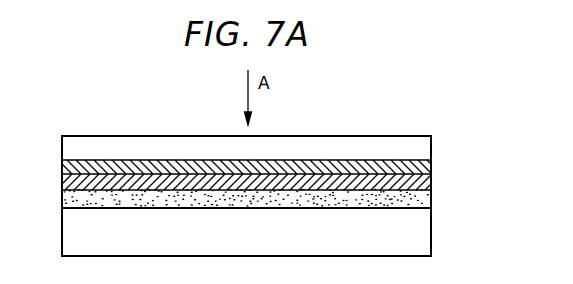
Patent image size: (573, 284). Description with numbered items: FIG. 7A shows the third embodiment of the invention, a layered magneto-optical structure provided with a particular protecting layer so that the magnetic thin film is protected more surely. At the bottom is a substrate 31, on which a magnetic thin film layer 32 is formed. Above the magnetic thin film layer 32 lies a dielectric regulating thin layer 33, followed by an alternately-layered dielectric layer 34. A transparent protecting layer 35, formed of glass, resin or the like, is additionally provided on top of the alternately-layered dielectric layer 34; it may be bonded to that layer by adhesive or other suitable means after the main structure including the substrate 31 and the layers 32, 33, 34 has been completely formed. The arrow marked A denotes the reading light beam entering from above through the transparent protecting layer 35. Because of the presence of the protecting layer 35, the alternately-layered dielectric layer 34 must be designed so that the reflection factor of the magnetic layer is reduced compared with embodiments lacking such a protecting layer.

The substrate 31 is at (425, 233).
The magnetic thin film layer 32 is at (427, 198).
The dielectric regulating thin layer 33 is at (427, 183).
The alternately-layered dielectric layer 34 is at (427, 163).
The transparent protecting layer 35 is at (427, 145).